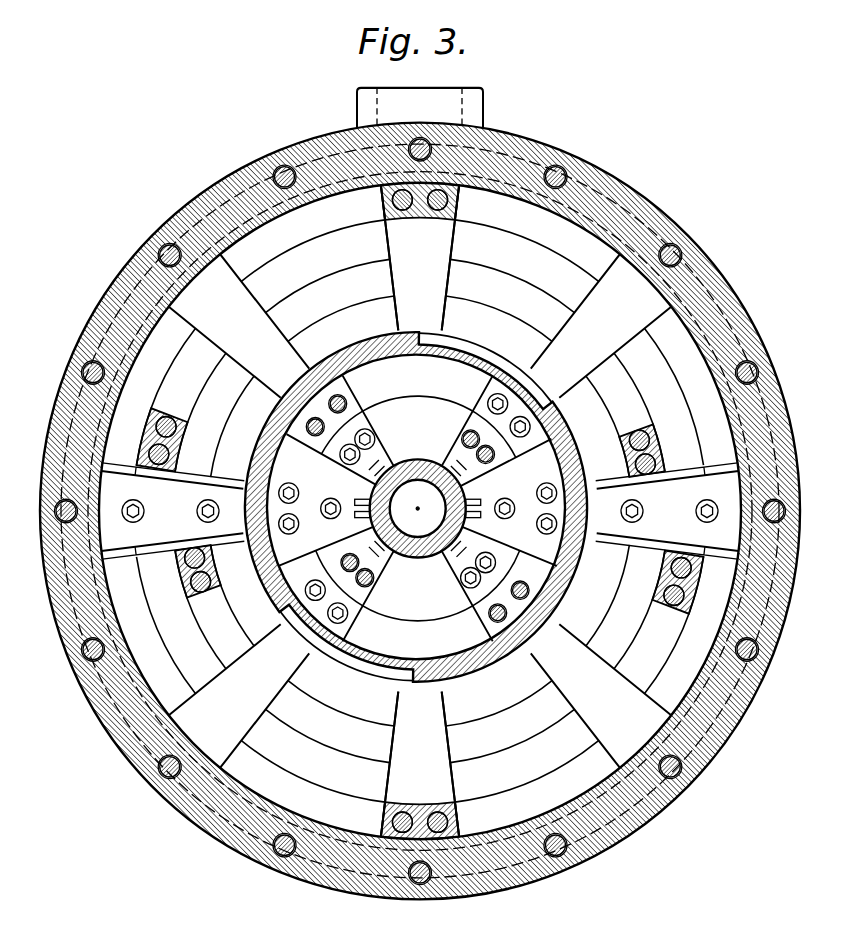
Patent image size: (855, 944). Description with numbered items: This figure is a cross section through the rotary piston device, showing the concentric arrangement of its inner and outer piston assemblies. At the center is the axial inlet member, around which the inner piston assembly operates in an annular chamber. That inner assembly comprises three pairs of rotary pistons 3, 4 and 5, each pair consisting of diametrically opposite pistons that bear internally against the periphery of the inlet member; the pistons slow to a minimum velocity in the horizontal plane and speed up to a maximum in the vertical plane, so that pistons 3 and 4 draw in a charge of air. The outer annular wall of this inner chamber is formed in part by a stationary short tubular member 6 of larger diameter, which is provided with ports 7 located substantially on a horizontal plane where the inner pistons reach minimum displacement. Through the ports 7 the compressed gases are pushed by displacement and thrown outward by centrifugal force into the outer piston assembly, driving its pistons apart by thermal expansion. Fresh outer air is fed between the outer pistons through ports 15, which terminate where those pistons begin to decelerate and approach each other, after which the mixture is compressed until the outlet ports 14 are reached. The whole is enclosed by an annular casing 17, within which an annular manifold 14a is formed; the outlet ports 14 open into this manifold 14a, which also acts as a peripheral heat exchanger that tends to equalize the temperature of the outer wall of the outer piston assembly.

The rotary pistons 3 is at (417, 509).
The rotary pistons 4 is at (418, 509).
The rotary pistons 5 is at (417, 509).
The short tubular member 6 is at (416, 519).
The ports 7 is at (419, 511).
The outlet ports 14 is at (417, 511).
The annular manifold 14a is at (576, 184).
The ports 15 is at (416, 513).
The annular casing 17 is at (420, 511).